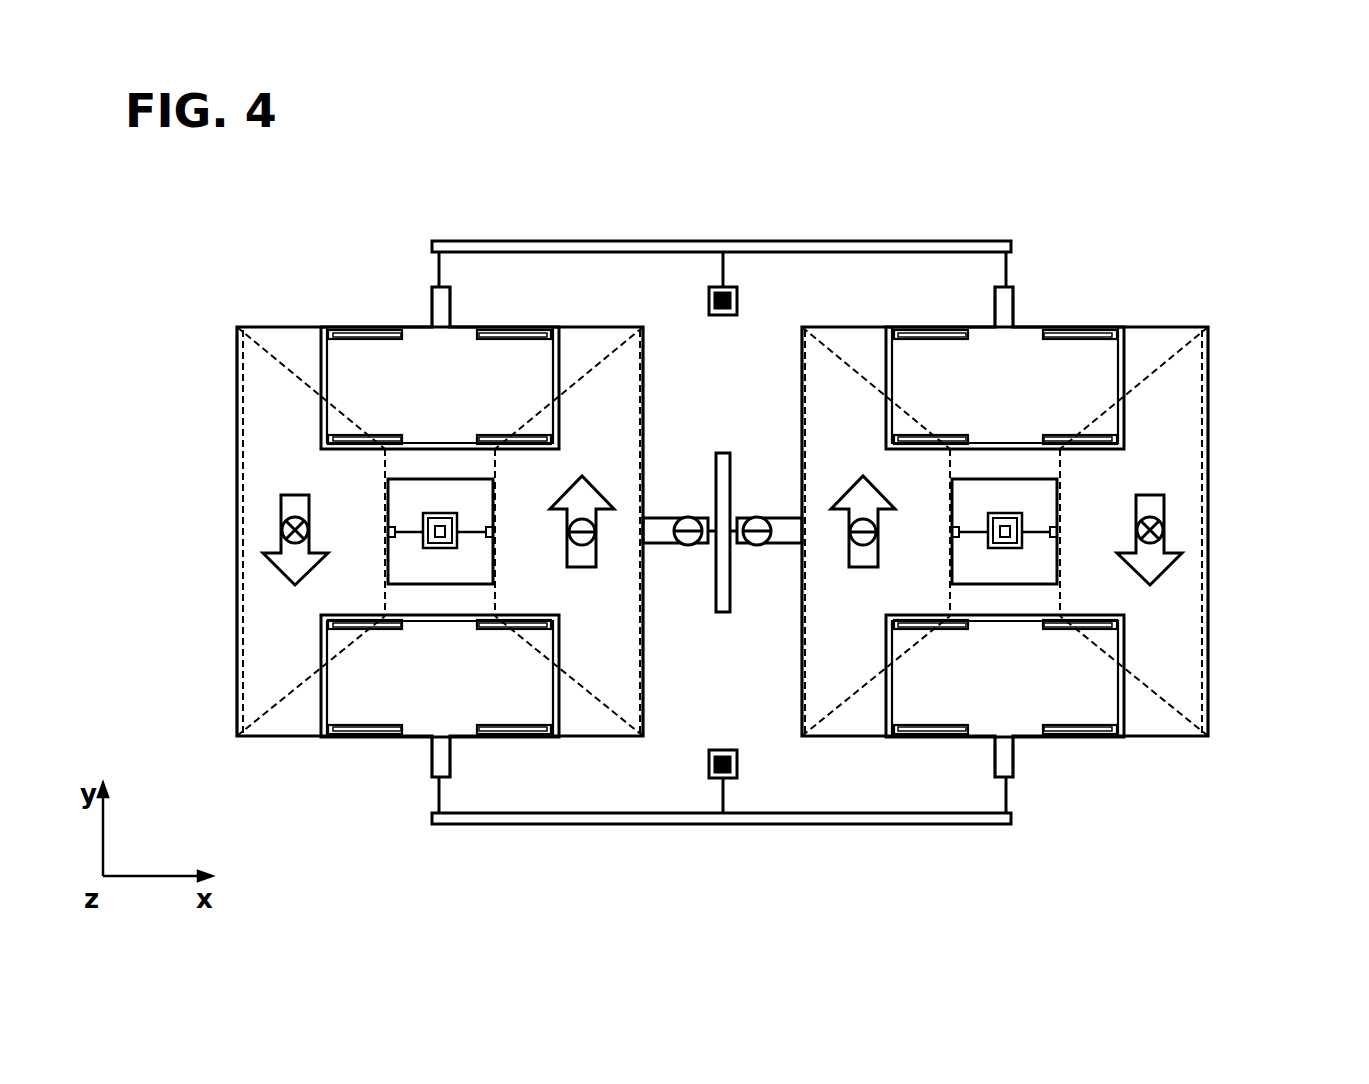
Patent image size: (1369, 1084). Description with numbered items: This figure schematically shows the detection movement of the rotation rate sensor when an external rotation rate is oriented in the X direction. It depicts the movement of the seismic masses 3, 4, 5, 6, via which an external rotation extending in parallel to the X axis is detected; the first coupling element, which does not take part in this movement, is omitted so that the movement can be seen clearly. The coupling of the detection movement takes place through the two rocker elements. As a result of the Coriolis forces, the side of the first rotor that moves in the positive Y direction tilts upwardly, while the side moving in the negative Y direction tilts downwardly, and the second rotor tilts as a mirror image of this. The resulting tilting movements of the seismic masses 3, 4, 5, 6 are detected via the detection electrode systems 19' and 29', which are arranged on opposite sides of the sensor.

The seismic mass 3 is at (379, 356).
The seismic mass 4 is at (376, 700).
The seismic mass 5 is at (1087, 356).
The seismic mass 6 is at (1084, 700).
The detection electrode system 19' is at (424, 532).
The detection electrode system 29' is at (1021, 532).